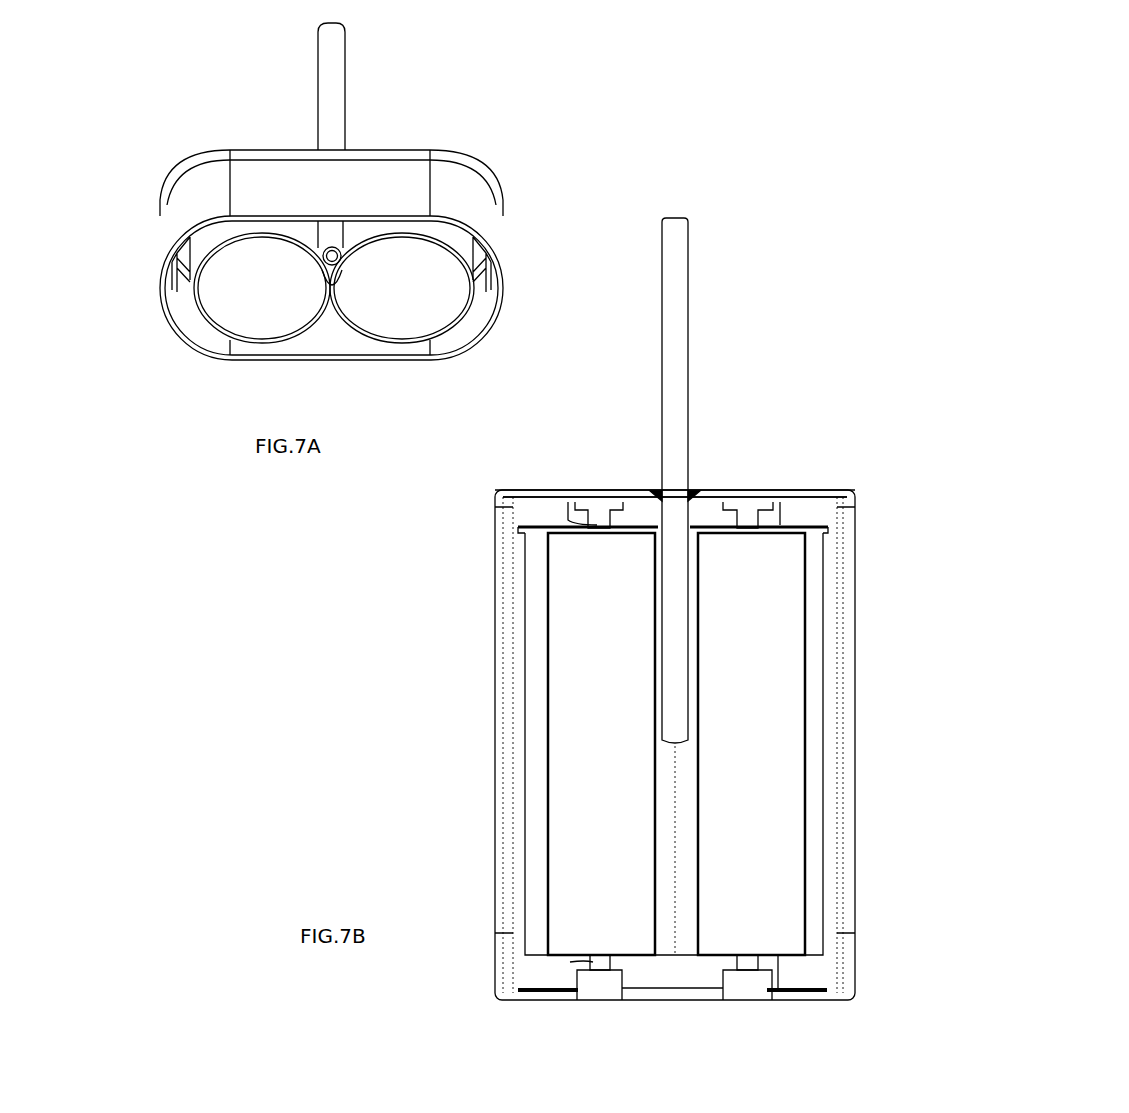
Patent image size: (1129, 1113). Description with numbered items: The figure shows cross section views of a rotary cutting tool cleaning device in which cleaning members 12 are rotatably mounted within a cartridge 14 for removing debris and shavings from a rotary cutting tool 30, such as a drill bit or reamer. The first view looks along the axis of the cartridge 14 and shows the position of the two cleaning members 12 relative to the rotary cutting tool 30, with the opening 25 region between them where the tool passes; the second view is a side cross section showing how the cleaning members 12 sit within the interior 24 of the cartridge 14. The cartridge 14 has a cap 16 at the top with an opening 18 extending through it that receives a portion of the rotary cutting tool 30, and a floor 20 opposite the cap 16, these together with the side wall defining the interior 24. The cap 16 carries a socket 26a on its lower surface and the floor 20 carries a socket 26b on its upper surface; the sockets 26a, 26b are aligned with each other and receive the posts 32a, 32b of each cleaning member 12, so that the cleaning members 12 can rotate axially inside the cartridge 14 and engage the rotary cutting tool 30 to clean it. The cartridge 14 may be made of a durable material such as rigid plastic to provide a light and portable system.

In FIG. 7B, the cleaning member 12 is at (805, 787).
In FIG. 7A, the cartridge 14 is at (505, 228).
In FIG. 7B, the cartridge 14 is at (852, 630).
In FIG. 7A, the cap 16 is at (205, 160).
In FIG. 7B, the cap 16 is at (803, 490).
In FIG. 7B, the opening 18 is at (697, 495).
In FIG. 7B, the floor 20 is at (788, 1002).
In FIG. 7B, the interior 24 is at (527, 568).
In FIG. 7A, the cell receiving opening 25 is at (226, 305).
In FIG. 7B, the socket 26a is at (611, 512).
In FIG. 7B, the socket 26b is at (735, 987).
In FIG. 7A, the rotary cutting tool 30 is at (338, 53).
In FIG. 7B, the rotary cutting tool 30 is at (676, 285).
In FIG. 7B, the post 32a is at (568, 505).
In FIG. 7B, the post 32b is at (580, 963).